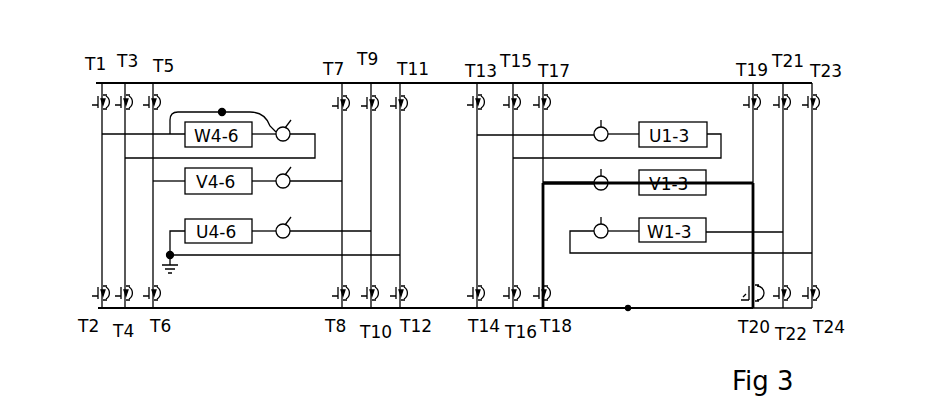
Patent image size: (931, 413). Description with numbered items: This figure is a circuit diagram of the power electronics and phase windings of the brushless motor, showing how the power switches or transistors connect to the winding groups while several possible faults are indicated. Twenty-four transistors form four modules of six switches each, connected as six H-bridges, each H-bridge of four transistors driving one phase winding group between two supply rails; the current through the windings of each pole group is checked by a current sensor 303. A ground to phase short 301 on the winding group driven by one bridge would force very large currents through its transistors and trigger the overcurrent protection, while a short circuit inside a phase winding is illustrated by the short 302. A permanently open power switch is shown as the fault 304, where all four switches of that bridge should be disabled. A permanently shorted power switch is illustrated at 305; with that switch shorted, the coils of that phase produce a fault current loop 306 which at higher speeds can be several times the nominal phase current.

The ground to phase short 301 is at (190, 266).
The short circuit inside a phase winding 302 is at (228, 110).
The current sensor 303 is at (286, 124).
The permanently open power switch fault 304 is at (456, 85).
The permanently shorted power switch fault 305 is at (740, 317).
The fault current loop 306 is at (628, 312).